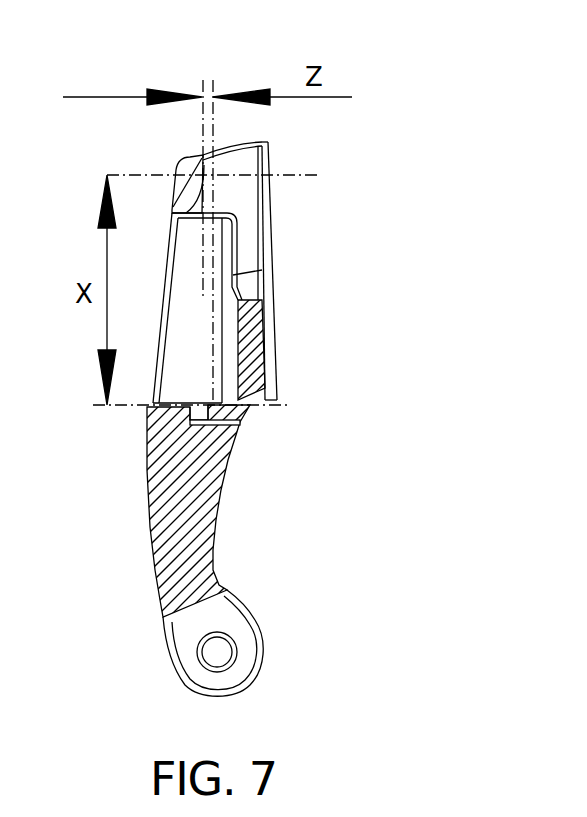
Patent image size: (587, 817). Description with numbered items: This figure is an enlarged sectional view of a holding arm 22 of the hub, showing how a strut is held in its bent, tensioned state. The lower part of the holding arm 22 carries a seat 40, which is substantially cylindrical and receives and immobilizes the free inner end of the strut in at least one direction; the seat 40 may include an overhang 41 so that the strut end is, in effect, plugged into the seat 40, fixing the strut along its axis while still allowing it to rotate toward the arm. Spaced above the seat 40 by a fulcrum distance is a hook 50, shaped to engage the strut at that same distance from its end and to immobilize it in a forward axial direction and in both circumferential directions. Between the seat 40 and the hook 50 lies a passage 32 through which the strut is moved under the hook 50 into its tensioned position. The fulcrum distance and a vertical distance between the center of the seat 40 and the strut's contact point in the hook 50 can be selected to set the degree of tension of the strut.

The holding arm 22 is at (242, 540).
The passage 32 is at (223, 255).
The seat 40 is at (217, 412).
The overhang 41 is at (259, 454).
The hook 50 is at (205, 187).